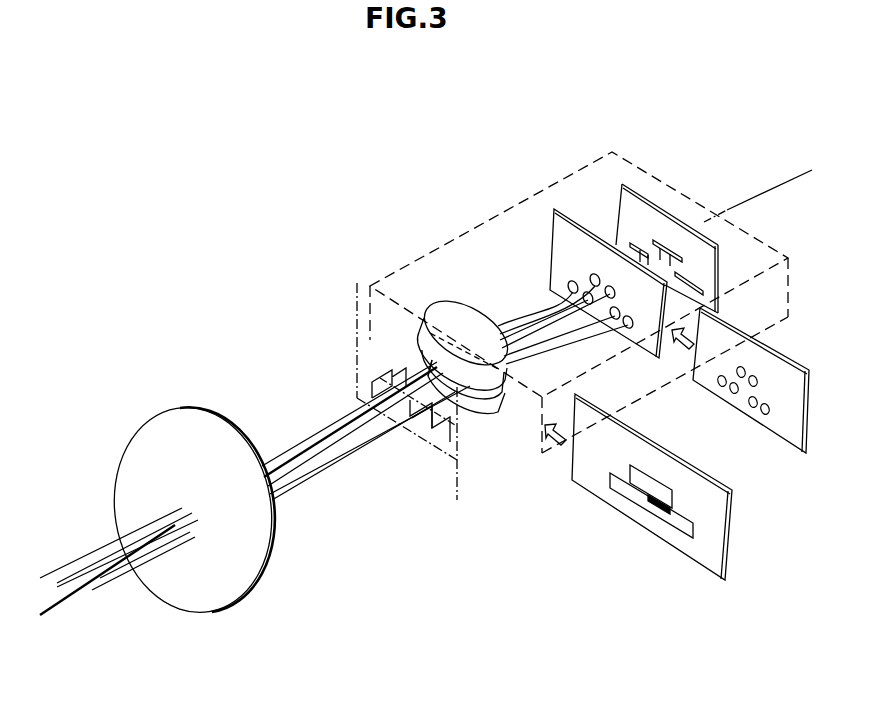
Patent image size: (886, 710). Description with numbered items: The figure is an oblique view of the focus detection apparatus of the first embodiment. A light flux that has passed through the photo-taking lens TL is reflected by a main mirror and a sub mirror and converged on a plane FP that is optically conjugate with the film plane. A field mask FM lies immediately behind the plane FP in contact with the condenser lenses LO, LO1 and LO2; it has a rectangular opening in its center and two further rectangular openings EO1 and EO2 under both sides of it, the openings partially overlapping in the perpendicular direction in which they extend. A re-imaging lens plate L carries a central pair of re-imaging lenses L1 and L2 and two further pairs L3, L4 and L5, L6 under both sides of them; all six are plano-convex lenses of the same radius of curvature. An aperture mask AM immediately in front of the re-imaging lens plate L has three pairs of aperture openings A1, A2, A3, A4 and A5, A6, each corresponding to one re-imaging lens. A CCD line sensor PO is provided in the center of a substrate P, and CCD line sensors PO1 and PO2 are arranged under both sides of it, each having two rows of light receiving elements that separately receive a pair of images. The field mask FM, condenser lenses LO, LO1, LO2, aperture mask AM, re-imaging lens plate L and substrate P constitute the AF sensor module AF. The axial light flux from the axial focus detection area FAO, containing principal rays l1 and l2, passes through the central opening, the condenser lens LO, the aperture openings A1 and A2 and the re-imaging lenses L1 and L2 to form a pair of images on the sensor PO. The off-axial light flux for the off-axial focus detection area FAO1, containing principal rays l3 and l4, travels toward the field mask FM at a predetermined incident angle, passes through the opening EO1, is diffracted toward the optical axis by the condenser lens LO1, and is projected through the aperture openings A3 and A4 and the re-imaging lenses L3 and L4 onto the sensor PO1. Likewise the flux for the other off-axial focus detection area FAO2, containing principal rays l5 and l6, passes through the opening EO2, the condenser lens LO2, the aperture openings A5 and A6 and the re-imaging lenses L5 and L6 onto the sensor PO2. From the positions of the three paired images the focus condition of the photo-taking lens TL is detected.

The photo-taking lens TL is at (167, 407).
The plane optically conjugate with film plane FP is at (357, 283).
The axial focus detection area FAO is at (392, 370).
The off-axial focus detection area FAO1 is at (372, 398).
The off-axial focus detection area FAO2 is at (450, 440).
The AF sensor module AF is at (555, 180).
The condenser lens LO is at (475, 363).
The condenser lens LO1 is at (428, 310).
The condenser lens LO2 is at (500, 415).
The re-imaging lens plate L is at (554, 216).
The re-imaging lens L1 is at (600, 305).
The re-imaging lens L2 is at (547, 326).
The re-imaging lens L3 is at (572, 281).
The re-imaging lens L4 is at (580, 278).
The re-imaging lens L5 is at (629, 328).
The re-imaging lens L6 is at (615, 320).
The substrate P is at (685, 212).
The CCD line sensor PO is at (670, 238).
The CCD line sensor PO1 is at (645, 246).
The CCD line sensor PO2 is at (700, 286).
The aperture mask AM is at (735, 399).
The aperture opening A1 is at (757, 375).
The aperture opening A2 is at (743, 366).
The aperture opening A3 is at (731, 392).
The aperture opening A4 is at (718, 381).
The aperture opening A5 is at (766, 415).
The aperture opening A6 is at (752, 408).
The field mask FM is at (679, 503).
The rectangular opening EO1 is at (616, 493).
The rectangular opening EO2 is at (682, 528).
The principal ray l1 is at (55, 571).
The principal ray l2 is at (188, 538).
The principal ray l3 is at (93, 567).
The principal ray l4 is at (145, 537).
The principal ray l5 is at (122, 580).
The principal ray l6 is at (160, 560).